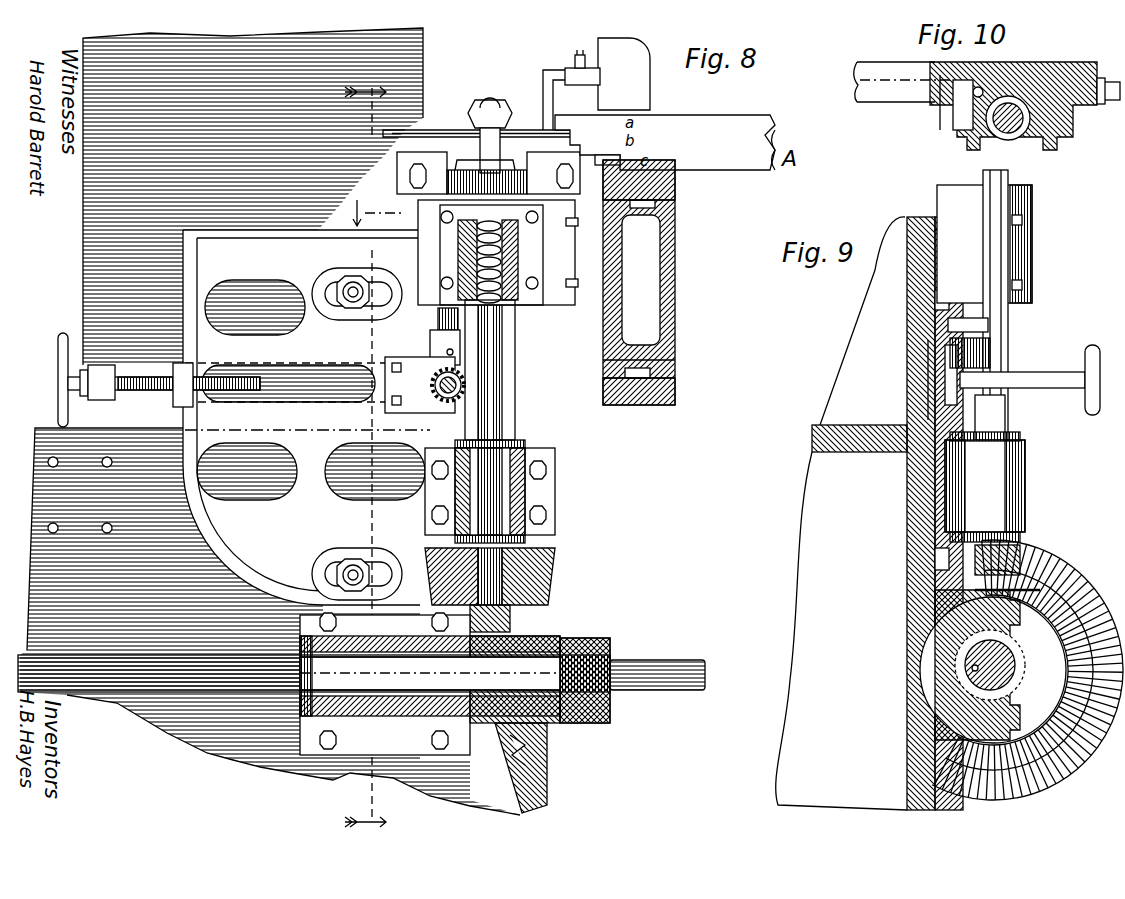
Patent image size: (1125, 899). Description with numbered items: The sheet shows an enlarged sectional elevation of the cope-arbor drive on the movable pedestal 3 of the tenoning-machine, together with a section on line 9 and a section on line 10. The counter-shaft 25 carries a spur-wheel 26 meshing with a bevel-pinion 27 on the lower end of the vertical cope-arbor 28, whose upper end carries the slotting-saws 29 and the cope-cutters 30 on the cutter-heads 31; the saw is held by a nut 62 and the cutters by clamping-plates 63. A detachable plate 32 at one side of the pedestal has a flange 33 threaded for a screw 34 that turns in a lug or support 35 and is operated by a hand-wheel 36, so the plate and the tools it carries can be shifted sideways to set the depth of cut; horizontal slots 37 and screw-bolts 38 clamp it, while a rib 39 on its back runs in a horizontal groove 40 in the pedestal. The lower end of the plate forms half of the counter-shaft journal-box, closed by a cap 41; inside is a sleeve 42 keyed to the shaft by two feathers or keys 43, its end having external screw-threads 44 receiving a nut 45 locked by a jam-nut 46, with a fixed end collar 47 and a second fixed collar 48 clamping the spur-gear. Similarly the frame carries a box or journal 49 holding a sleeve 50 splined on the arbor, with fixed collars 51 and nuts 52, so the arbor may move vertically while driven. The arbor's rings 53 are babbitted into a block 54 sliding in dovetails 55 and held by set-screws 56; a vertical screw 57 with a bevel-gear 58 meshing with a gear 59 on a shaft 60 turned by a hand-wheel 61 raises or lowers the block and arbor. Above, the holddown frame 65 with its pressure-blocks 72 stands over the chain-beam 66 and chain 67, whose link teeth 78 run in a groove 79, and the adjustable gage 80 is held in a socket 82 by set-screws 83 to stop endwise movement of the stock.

In FIG. 8, the pedestal 3 is at (83, 310).
In FIG. 9, the pedestal 3 is at (907, 492).
In FIG. 10, the pedestal 3 is at (1097, 72).
In FIG. 8, the section line 9 is at (373, 450).
In FIG. 8, the section line 10 is at (362, 213).
In FIG. 8, the counter-shaft 25 is at (125, 692).
In FIG. 9, the counter-shaft 25 is at (965, 664).
In FIG. 8, the spur-wheel 26 is at (547, 785).
In FIG. 9, the spur-wheel 26 is at (1030, 782).
In FIG. 8, the bevel-pinion 27 is at (553, 583).
In FIG. 9, the bevel-pinion 27 is at (1020, 552).
In FIG. 8, the cope-arbor 28 is at (494, 100).
In FIG. 9, the cope-arbor 28 is at (1010, 312).
In FIG. 10, the cope-arbor 28 is at (1006, 140).
In FIG. 8, the slotting-saws 29 is at (383, 134).
In FIG. 8, the cope-cutters 30 is at (605, 160).
In FIG. 8, the cutter-heads 31 is at (495, 165).
In FIG. 8, the detachable plate 32 is at (306, 417).
In FIG. 9, the detachable plate 32 is at (940, 518).
In FIG. 8, the flange 33 is at (183, 408).
In FIG. 8, the screw 34 is at (152, 377).
In FIG. 8, the lug or support 35 is at (102, 402).
In FIG. 8, the hand-wheel 36 is at (58, 388).
In FIG. 8, the horizontal slots 37 is at (342, 285).
In FIG. 8, the screw-bolts 38 is at (342, 318).
In FIG. 9, the screw-bolts 38 is at (935, 300).
In FIG. 9, the guide or rib 39 is at (945, 395).
In FIG. 9, the horizontal channel or groove 40 is at (935, 380).
In FIG. 8, the cap 41 is at (350, 756).
In FIG. 9, the cap 41 is at (1012, 668).
In FIG. 8, the sleeve 42 is at (320, 716).
In FIG. 9, the sleeve 42 is at (1020, 652).
In FIG. 9, the feathers or keys 43 is at (945, 695).
In FIG. 8, the external screw-threads 44 is at (640, 690).
In FIG. 8, the nut 45 is at (585, 723).
In FIG. 8, the jam-nut 46 is at (600, 655).
In FIG. 8, the fixed end collar 47 is at (300, 680).
In FIG. 8, the second fixed collar 48 is at (505, 752).
In FIG. 8, the box or journal 49 is at (555, 492).
In FIG. 9, the box or journal 49 is at (1025, 495).
In FIG. 8, the sleeve 50 is at (500, 505).
In FIG. 8, the fixed collars or flanges 51 is at (525, 444).
In FIG. 9, the fixed collars or flanges 51 is at (1020, 437).
In FIG. 8, the nuts 52 is at (510, 618).
In FIG. 8, the rings 53 is at (515, 330).
In FIG. 8, the block 54 is at (540, 300).
In FIG. 9, the block 54 is at (1032, 250).
In FIG. 10, the block 54 is at (963, 137).
In FIG. 10, the dovetails 55 is at (945, 100).
In FIG. 8, the set-screws 56 is at (572, 228).
In FIG. 10, the set-screws 56 is at (1102, 101).
In FIG. 8, the vertical screw 57 is at (438, 318).
In FIG. 9, the vertical screw 57 is at (988, 325).
In FIG. 8, the bevel-gear 58 is at (430, 348).
In FIG. 9, the bevel-gear 58 is at (990, 352).
In FIG. 8, the bevel-gear 59 is at (440, 413).
In FIG. 9, the bevel-gear 59 is at (978, 400).
In FIG. 8, the shaft 60 is at (464, 385).
In FIG. 9, the shaft 60 is at (1045, 388).
In FIG. 9, the hand-wheel 61 is at (1100, 380).
In FIG. 8, the nut 62 is at (488, 104).
In FIG. 8, the clamping-plates 63 is at (400, 172).
In FIG. 8, the frame or casing 65 is at (640, 52).
In FIG. 8, the chain-beam 66 is at (675, 293).
In FIG. 8, the chain 67 is at (675, 180).
In FIG. 8, the pressure-blocks 72 is at (660, 118).
In FIG. 8, the projecting tooth or lug 78 is at (675, 205).
In FIG. 8, the groove or channel 79 is at (698, 346).
In FIG. 8, the adjustable gage 80 is at (553, 100).
In FIG. 8, the socket or bracket 82 is at (600, 76).
In FIG. 8, the set-screw 83 is at (577, 58).